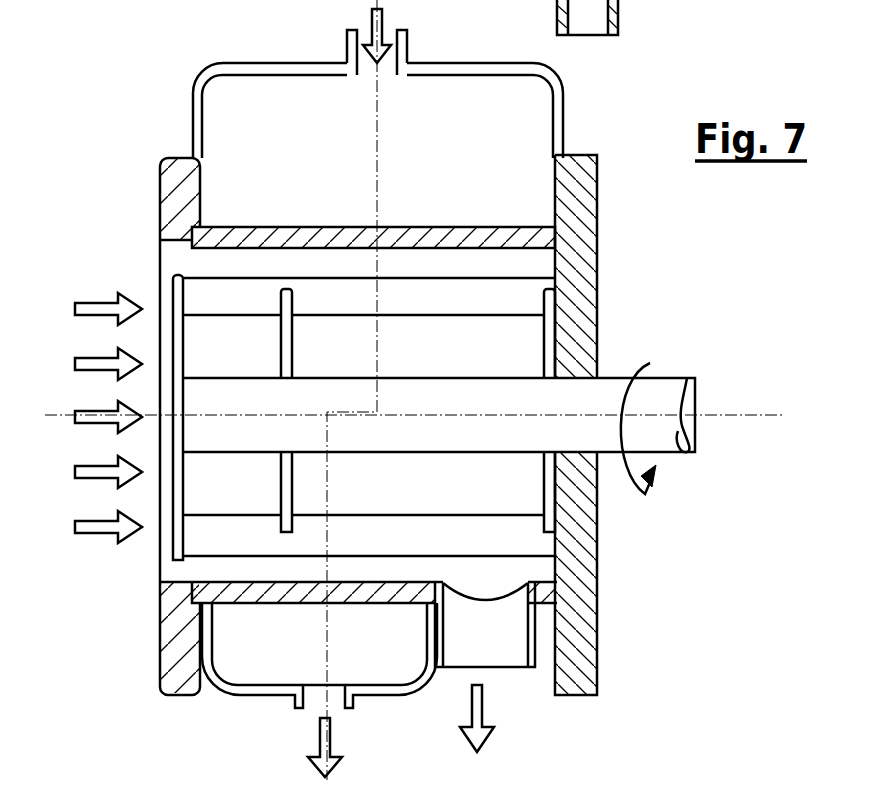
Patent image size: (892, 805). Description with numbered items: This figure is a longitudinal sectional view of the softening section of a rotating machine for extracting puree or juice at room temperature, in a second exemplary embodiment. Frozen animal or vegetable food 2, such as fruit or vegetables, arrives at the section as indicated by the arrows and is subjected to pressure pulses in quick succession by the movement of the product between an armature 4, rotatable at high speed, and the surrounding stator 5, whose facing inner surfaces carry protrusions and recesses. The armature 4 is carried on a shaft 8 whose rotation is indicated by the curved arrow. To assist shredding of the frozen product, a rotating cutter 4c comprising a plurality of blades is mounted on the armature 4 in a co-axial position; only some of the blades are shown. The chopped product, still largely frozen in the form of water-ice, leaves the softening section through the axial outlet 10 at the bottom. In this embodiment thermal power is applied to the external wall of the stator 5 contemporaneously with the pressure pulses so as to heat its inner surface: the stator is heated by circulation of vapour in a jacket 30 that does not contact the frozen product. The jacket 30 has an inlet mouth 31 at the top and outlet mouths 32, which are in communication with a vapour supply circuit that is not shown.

The animal or vegetable food 2 is at (82, 425).
The armature 4 is at (162, 298).
The rotating cutter 4c is at (283, 327).
The stator 5 is at (165, 303).
The drive shaft 8 is at (657, 407).
The axial outlet 10 is at (497, 667).
The jacket 30 is at (257, 73).
The inlet mouth 31 is at (407, 43).
The outlet mouth 32 is at (598, 29).